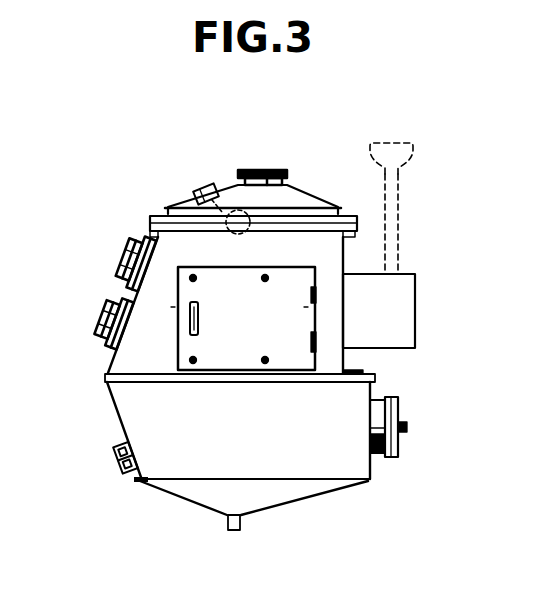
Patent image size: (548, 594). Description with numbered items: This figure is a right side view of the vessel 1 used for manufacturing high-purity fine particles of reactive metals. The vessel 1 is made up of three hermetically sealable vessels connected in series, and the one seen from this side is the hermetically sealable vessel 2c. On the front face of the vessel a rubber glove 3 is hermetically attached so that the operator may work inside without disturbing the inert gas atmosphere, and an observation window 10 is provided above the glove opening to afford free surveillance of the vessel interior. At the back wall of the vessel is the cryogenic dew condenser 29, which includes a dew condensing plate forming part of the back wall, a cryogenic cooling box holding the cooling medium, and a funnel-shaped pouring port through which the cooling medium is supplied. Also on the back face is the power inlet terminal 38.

The vessel 1 is at (112, 229).
The observation window 10 is at (122, 265).
The rubber glove 3 is at (103, 327).
The cryogenic dew condenser 29 is at (415, 301).
The hermetically sealable vessel 2c is at (323, 462).
The power inlet terminal 38 is at (403, 447).